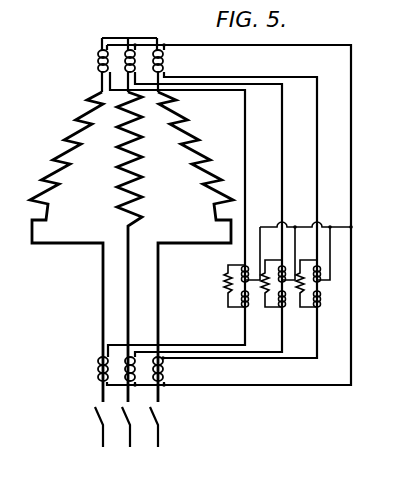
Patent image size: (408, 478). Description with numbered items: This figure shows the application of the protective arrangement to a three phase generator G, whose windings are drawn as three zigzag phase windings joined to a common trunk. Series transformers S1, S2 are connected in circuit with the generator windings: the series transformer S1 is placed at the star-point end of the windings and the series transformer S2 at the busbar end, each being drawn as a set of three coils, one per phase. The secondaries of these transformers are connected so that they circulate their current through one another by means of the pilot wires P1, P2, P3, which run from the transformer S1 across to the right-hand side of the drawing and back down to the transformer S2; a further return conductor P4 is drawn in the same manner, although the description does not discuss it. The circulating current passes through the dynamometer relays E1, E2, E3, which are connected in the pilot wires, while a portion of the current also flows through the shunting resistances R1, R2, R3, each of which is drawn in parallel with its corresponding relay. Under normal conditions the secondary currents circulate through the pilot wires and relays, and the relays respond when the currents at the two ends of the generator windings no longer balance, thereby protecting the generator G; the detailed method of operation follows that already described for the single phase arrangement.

The three phase generator G is at (198, 174).
The series transformer S1 is at (156, 52).
The series transformer S2 is at (98, 365).
The pilot wire P1 is at (262, 162).
The pilot wire P2 is at (284, 172).
The pilot wire P3 is at (319, 172).
The conductor P4 is at (373, 164).
The shunting resistance R1 is at (222, 269).
The shunting resistance R2 is at (264, 266).
The shunting resistance R3 is at (299, 266).
The dynamometer relay E1 is at (238, 296).
The dynamometer relay E2 is at (283, 302).
The dynamometer relay E3 is at (318, 302).